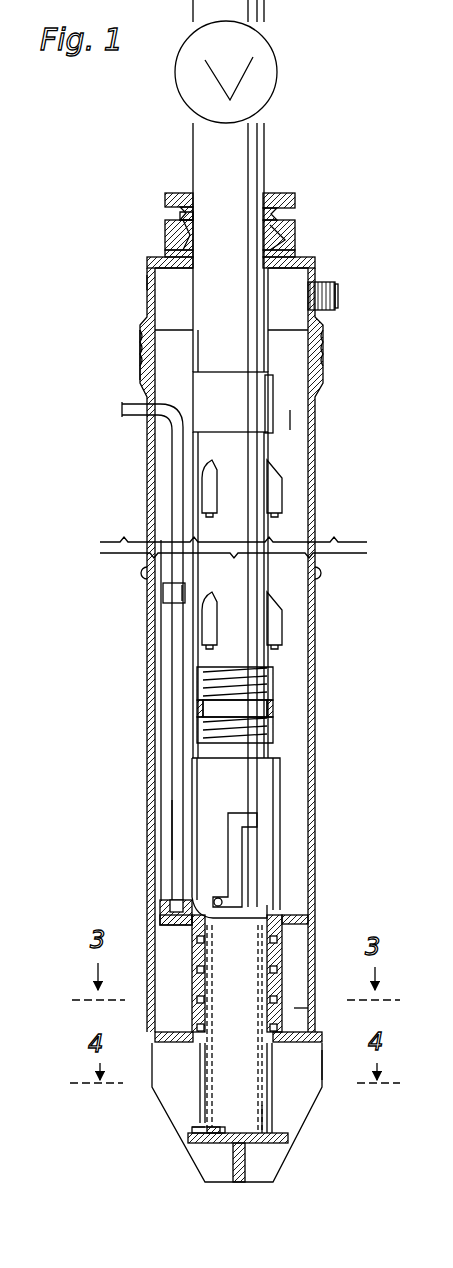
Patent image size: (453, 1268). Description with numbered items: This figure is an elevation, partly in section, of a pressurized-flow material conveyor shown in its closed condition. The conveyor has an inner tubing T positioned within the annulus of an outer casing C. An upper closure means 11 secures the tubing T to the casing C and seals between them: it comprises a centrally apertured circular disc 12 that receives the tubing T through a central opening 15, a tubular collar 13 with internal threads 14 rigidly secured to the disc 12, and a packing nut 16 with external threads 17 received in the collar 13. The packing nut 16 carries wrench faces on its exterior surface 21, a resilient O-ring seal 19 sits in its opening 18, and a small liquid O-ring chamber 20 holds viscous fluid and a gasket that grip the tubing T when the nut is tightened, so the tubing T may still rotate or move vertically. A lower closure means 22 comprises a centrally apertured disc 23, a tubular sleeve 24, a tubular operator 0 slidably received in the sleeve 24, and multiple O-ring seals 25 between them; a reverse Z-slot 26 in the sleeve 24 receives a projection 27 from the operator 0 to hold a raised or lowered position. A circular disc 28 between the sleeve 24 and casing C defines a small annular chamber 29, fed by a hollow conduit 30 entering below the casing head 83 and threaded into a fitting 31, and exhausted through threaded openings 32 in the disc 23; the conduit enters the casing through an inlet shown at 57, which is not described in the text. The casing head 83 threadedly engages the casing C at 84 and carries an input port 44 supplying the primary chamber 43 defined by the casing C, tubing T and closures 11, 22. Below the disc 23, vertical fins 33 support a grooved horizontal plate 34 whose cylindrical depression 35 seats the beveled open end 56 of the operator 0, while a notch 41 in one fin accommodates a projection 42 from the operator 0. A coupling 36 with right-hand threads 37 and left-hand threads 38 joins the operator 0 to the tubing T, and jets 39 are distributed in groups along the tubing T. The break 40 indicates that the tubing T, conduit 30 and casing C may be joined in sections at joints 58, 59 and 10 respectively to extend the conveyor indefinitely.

The outer casing C is at (315, 616).
The inner tubing T is at (253, 589).
The casing joint 10 is at (320, 573).
The upper closure means 11 is at (150, 232).
The circular disc 12 is at (315, 262).
The tubular collar 13 is at (295, 240).
The internal threads 14 is at (295, 224).
The central opening 15 is at (276, 268).
The packing nut 16 is at (278, 193).
The external threads 17 is at (280, 212).
The opening of packing nut 18 is at (160, 212).
The resilient O-ring seal 19 is at (187, 193).
The liquid O-ring chamber 20 is at (295, 252).
The exterior surface with wrench faces 21 is at (165, 200).
The lower closure means 22 is at (193, 1052).
The centrally apertured disc 23 is at (310, 1043).
The tubular sleeve 24 is at (290, 955).
The resilient O-ring seals 25 is at (278, 940).
The reverse Z-slot 26 is at (250, 813).
The projection 27 is at (222, 902).
The circular disc 28 is at (300, 915).
The annular chamber 29 is at (303, 1000).
The hollow conduit 30 is at (170, 828).
The internally threaded fitting 31 is at (160, 900).
The internally threaded openings 32 is at (295, 1043).
The vertical fins 33 is at (310, 1100).
The grooved horizontal plate 34 is at (290, 1150).
The cylindrical depression 35 is at (188, 1140).
The coupling 36 is at (273, 700).
The right-hand threads 37 is at (273, 675).
The left-hand threads 38 is at (273, 722).
The jets 39 is at (202, 620).
The break 40 is at (345, 545).
The notch 41 is at (190, 1130).
The projection 42 is at (215, 1127).
The primary chamber 43 is at (292, 420).
The input port 44 is at (338, 290).
The beveled open end 56 is at (275, 1113).
The inlet pipe 57 is at (122, 410).
The joint 58 is at (273, 403).
The conduit joint 59 is at (163, 592).
The casing head 83 is at (147, 282).
The threaded engagement 84 is at (140, 340).
The tubular operator 0 is at (273, 742).